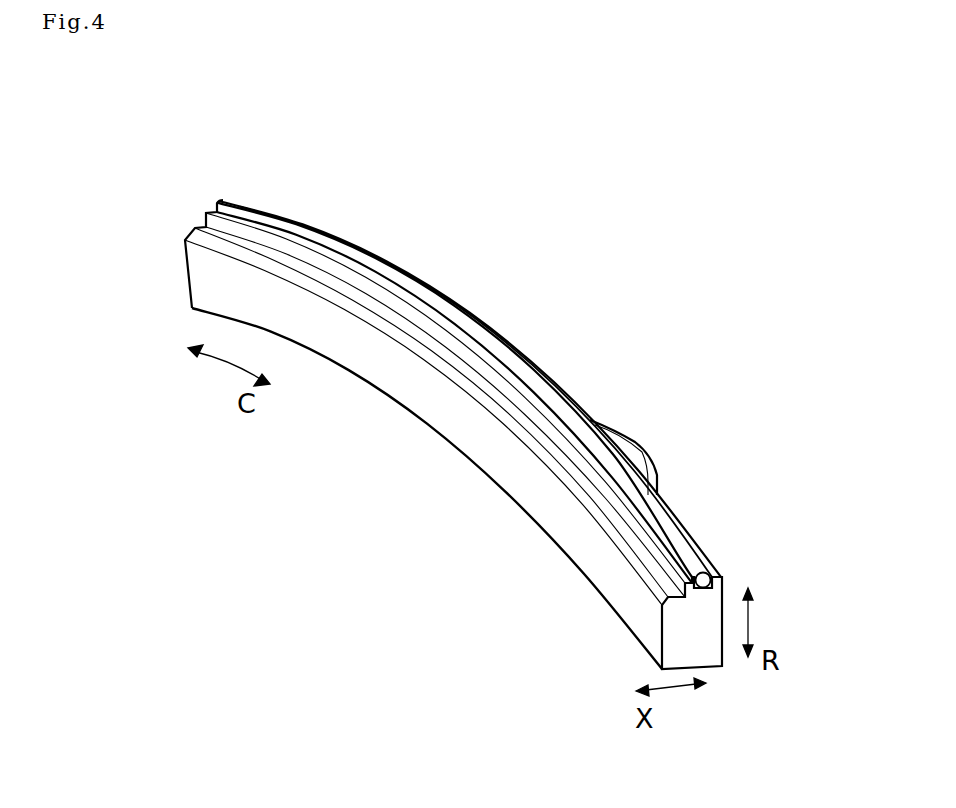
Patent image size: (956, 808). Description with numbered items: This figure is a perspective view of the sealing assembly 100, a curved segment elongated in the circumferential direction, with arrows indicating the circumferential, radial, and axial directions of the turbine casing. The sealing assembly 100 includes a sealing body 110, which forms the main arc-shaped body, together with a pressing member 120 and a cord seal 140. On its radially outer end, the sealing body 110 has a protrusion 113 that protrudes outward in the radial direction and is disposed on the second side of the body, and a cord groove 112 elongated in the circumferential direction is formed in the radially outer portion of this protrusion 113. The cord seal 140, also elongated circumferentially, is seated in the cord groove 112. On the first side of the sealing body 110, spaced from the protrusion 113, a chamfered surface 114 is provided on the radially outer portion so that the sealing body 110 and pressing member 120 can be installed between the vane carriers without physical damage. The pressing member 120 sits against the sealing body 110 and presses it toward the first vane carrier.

The sealing assembly 100 is at (125, 152).
The sealing body 110 is at (680, 630).
The cord groove 112 is at (700, 572).
The protrusion 113 is at (495, 374).
The chamfered surface 114 is at (437, 358).
The pressing member 120 is at (619, 433).
The cord seal 140 is at (655, 503).